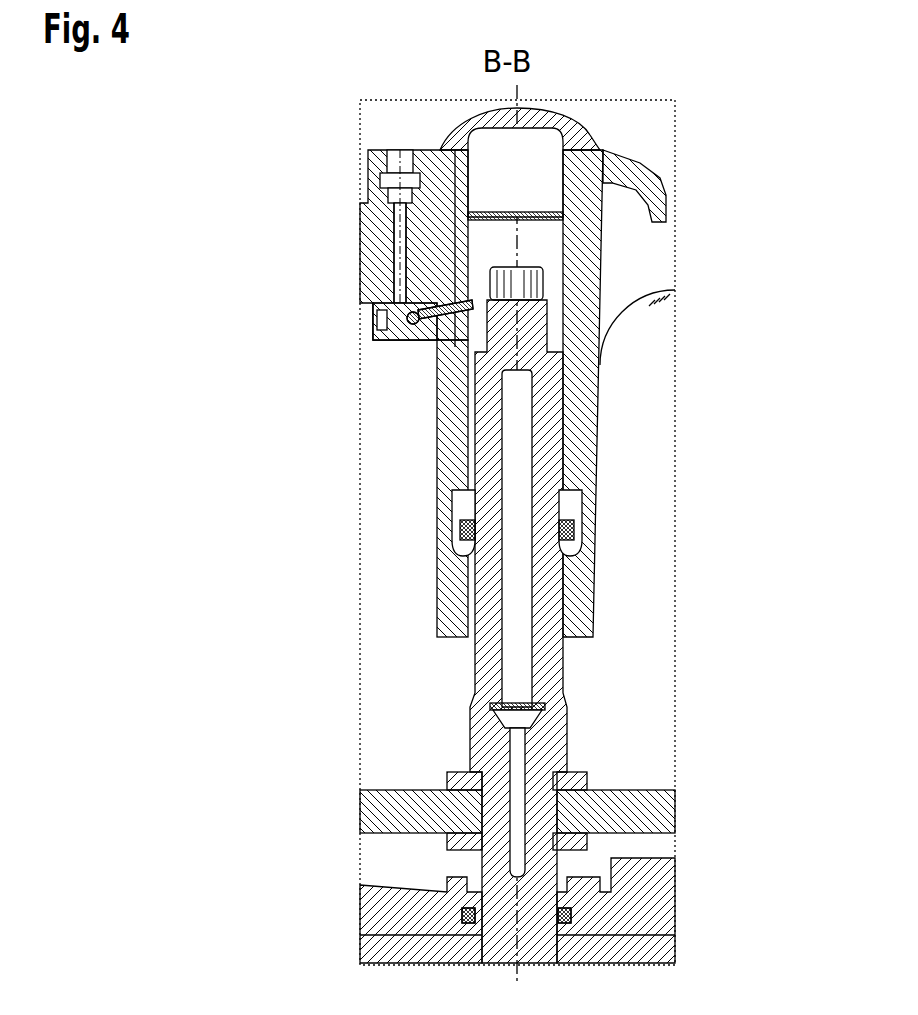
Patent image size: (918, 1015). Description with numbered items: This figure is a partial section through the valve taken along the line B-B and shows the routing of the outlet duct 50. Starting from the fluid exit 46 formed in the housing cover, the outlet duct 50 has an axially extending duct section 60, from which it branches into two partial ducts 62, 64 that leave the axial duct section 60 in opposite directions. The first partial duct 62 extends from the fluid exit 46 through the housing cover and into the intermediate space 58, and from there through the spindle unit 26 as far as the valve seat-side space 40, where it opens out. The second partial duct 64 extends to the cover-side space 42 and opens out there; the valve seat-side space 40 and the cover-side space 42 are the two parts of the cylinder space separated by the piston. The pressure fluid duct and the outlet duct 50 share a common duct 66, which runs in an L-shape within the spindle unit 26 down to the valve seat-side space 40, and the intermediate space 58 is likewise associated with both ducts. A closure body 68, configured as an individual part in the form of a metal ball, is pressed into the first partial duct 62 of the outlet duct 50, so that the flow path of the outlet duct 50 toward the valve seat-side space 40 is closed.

The spindle unit 26 is at (545, 470).
The valve seat-side space 40 is at (407, 857).
The cover-side space 42 is at (400, 748).
The fluid exit 46 is at (390, 148).
The outlet duct 50 is at (400, 272).
The intermediate space 58 is at (545, 240).
The axially extending duct section 60 is at (368, 212).
The first partial duct 62 is at (447, 317).
The second partial duct 64 is at (370, 318).
The duct 66 is at (507, 515).
The closure body 68 is at (407, 322).